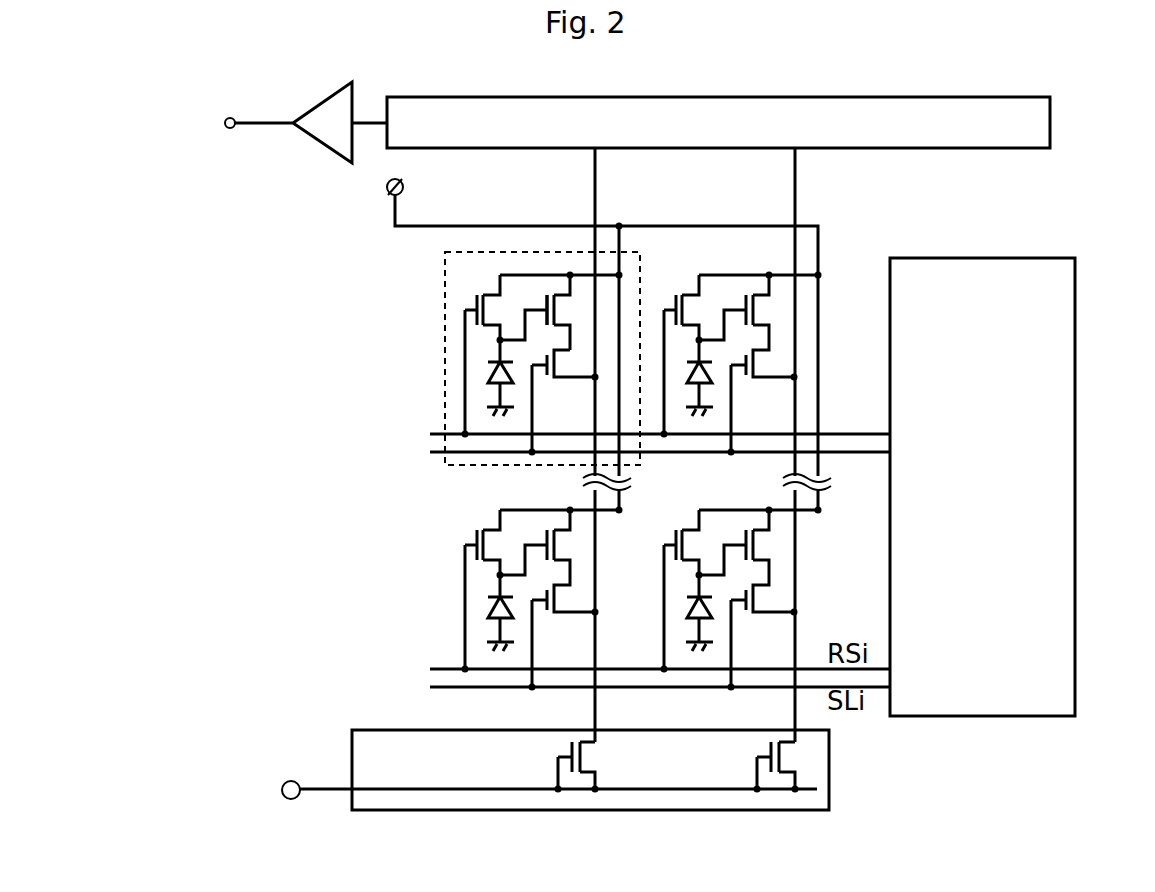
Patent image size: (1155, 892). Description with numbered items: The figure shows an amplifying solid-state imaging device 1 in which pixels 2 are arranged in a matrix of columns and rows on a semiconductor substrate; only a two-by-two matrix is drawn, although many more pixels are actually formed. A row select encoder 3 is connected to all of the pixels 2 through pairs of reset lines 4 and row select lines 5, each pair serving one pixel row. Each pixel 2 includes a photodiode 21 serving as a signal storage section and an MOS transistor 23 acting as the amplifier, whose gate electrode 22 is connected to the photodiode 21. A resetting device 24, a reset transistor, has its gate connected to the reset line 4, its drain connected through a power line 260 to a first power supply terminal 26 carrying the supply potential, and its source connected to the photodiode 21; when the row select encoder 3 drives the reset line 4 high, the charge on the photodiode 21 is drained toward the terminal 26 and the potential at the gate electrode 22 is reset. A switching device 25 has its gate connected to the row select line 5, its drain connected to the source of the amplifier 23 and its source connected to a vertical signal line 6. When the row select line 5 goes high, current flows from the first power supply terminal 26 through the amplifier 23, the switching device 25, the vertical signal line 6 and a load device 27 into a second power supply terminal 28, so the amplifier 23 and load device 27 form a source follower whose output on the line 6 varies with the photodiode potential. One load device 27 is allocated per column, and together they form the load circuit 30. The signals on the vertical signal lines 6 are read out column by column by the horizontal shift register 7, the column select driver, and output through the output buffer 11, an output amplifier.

The amplifying solid-state imaging device 1 is at (108, 277).
The pixel 2 is at (445, 323).
The row select encoder 3 is at (1078, 450).
The reset line 4 is at (432, 433).
The row select line 5 is at (432, 453).
The vertical signal line 6 is at (598, 705).
The horizontal shift register (column select driver) 7 is at (845, 97).
The output buffer (output amplifier) 11 is at (320, 143).
The photodiode 21 is at (486, 378).
The gate electrode 22 is at (546, 297).
The MOS transistor (amplifier) 23 is at (572, 309).
The resetting device (reset transistor) 24 is at (468, 291).
The switching device 25 is at (555, 388).
The first power supply terminal (VDD) 26 is at (387, 191).
The power line 260 is at (676, 226).
The load device 27 is at (607, 765).
The second power supply terminal (VSS) 28 is at (281, 791).
The load circuit 30 is at (472, 812).